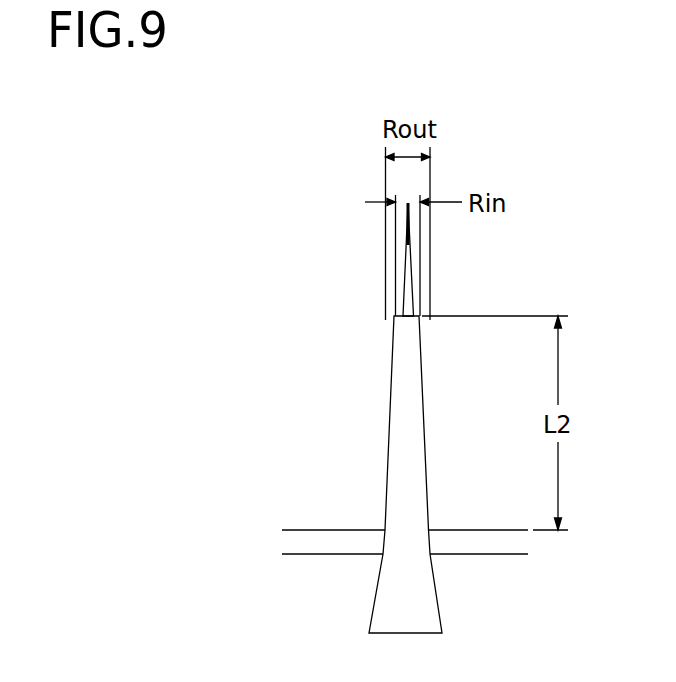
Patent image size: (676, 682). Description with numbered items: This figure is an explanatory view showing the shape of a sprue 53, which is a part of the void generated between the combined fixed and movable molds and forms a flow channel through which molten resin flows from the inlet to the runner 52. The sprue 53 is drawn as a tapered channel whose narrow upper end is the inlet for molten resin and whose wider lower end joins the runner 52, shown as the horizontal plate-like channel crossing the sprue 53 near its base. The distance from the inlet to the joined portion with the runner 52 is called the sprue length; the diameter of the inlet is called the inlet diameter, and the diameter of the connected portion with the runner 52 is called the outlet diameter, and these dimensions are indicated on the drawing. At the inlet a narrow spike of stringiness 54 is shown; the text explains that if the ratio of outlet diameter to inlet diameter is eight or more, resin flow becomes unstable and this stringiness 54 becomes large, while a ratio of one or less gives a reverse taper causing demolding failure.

The runner 52 is at (350, 543).
The sprue 53 is at (410, 402).
The stringiness 54 is at (408, 297).